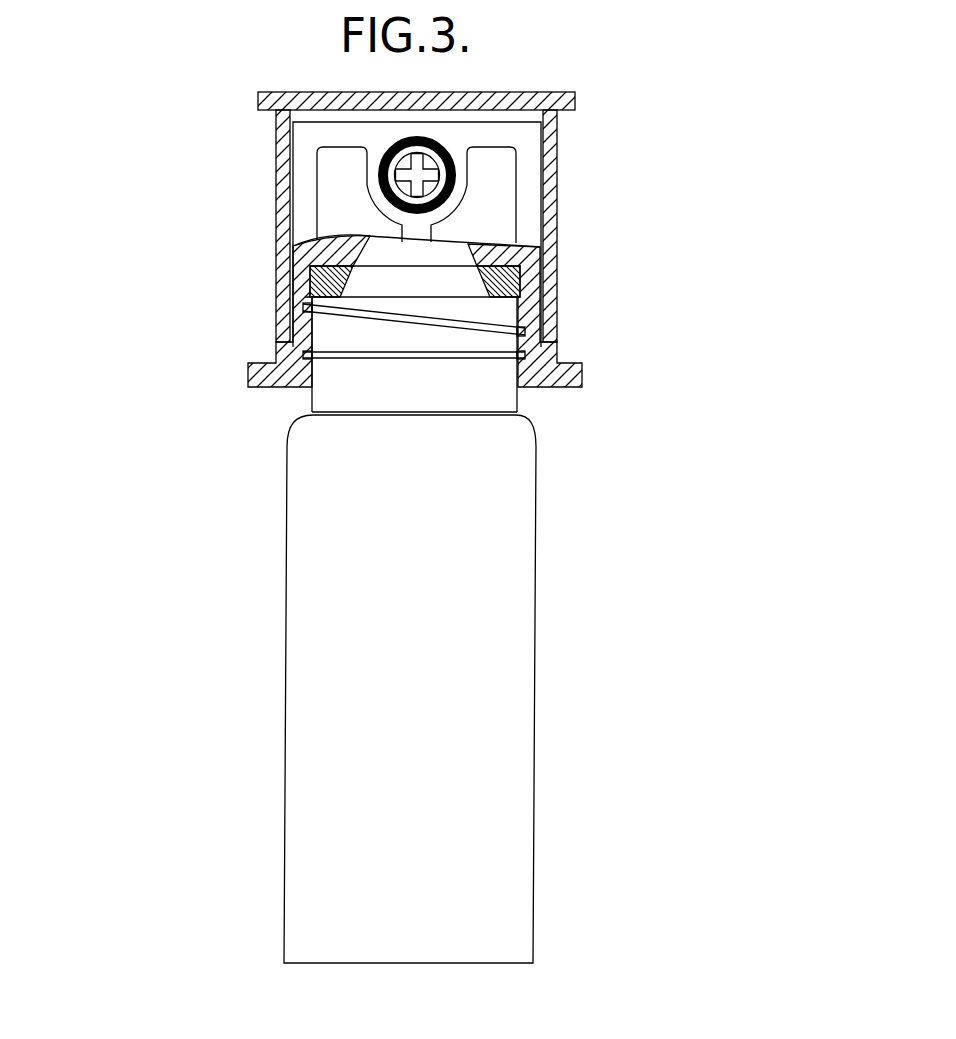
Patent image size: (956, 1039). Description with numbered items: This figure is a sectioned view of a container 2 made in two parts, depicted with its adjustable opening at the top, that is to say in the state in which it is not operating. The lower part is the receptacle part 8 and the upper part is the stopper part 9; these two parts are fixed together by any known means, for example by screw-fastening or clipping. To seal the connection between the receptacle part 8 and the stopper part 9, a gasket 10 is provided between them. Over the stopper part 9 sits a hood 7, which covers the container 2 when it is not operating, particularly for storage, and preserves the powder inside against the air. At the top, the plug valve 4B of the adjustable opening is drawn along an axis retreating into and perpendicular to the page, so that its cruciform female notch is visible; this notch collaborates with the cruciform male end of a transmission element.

The container 2 is at (137, 593).
The plug valve 4B is at (422, 173).
The hood 7 is at (553, 133).
The receptacle part 8 is at (445, 687).
The stopper part 9 is at (527, 210).
The gasket 10 is at (448, 280).